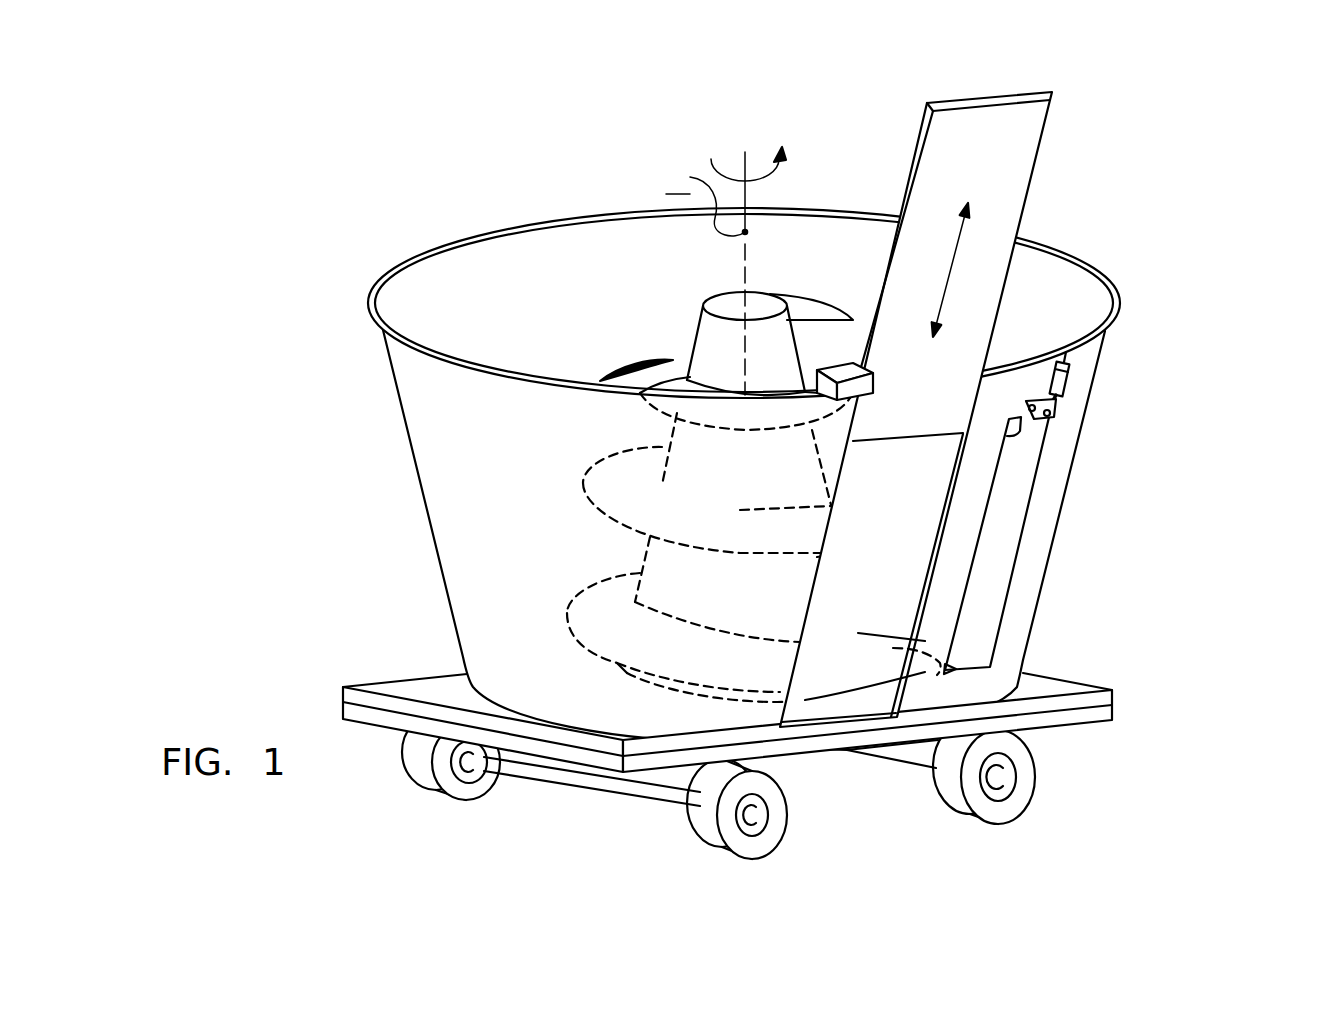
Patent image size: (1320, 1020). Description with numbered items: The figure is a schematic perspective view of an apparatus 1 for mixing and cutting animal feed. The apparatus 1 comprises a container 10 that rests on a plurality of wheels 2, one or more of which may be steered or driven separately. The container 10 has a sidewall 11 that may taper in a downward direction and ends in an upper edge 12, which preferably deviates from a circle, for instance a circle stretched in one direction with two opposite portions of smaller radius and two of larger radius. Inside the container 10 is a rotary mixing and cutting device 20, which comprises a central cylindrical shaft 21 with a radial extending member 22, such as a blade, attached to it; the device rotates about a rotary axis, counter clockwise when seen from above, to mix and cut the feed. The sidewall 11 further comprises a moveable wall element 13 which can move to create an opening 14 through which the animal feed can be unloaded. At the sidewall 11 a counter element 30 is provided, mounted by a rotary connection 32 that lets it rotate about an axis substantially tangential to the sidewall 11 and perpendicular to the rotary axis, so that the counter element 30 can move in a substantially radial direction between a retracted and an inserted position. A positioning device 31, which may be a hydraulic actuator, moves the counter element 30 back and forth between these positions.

The apparatus 1 is at (394, 218).
The wheels 2 is at (430, 778).
The container 10 is at (648, 434).
The sidewall 11 is at (443, 577).
The upper edge 12 is at (565, 222).
The moveable wall element 13 is at (967, 165).
The opening 14 is at (835, 708).
The rotary mixing and cutting device 20 is at (738, 381).
The central cylindrical shaft 21 is at (787, 345).
The radial extending member 22 is at (665, 372).
The counter element 30 is at (1012, 503).
The positioning device 31 is at (1061, 383).
The rotary connection 32 is at (1031, 408).